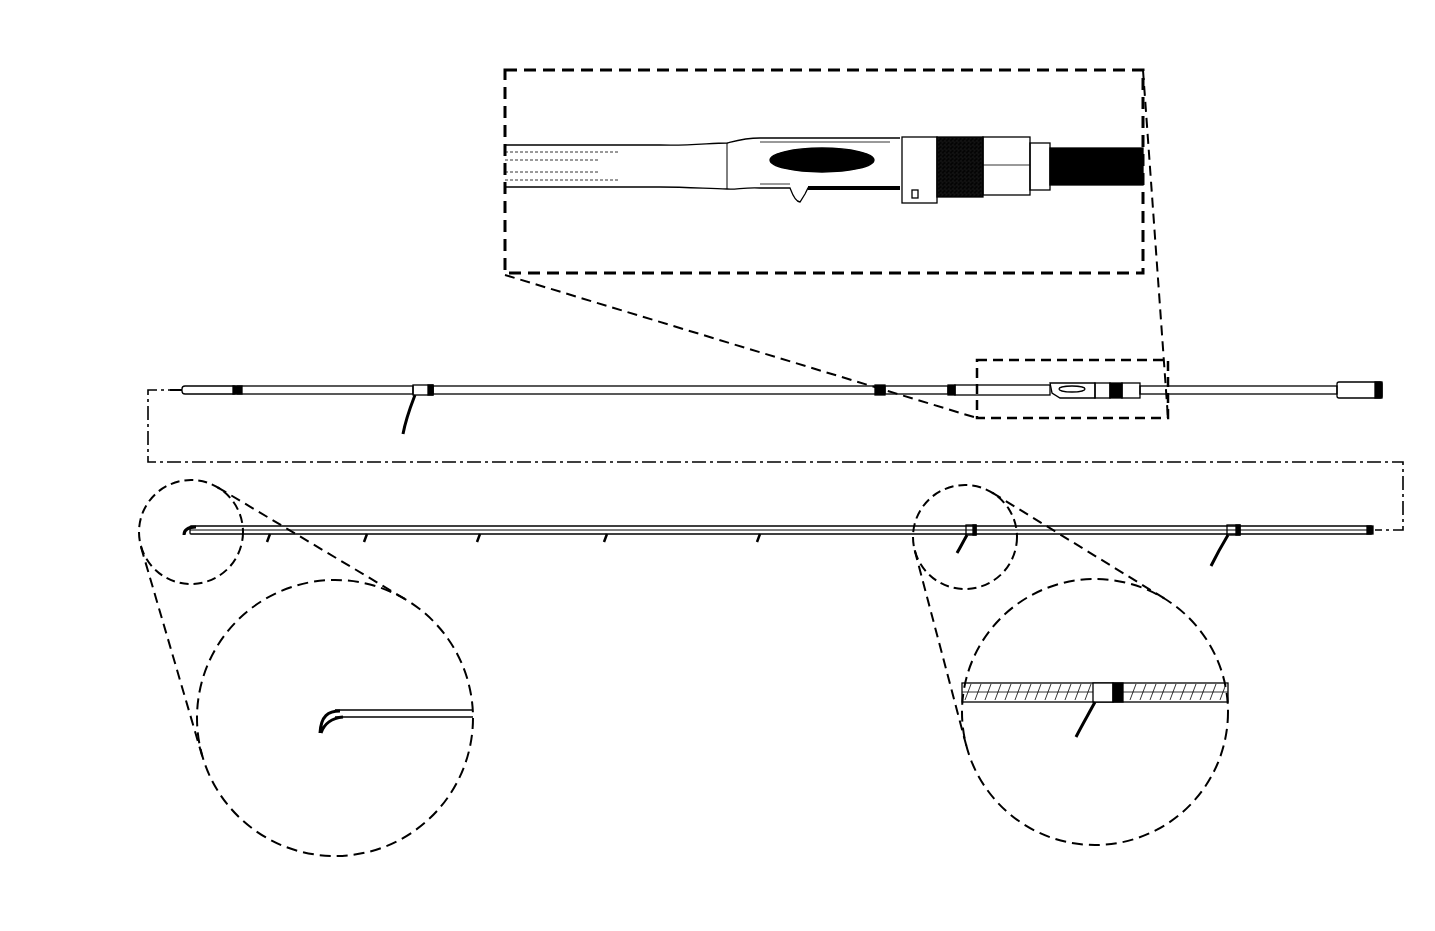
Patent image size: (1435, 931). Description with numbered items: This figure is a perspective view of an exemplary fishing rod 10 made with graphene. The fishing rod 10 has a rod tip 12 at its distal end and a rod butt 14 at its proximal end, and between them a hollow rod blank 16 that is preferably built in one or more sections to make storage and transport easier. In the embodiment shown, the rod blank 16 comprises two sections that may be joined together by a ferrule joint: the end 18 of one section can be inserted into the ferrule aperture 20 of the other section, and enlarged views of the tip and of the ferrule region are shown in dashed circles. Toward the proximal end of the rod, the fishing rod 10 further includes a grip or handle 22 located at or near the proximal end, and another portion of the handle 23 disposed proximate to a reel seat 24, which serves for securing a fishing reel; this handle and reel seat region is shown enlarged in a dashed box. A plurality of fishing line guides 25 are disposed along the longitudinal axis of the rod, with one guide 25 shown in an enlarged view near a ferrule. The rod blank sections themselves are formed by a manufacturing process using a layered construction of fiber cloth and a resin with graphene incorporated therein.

The fishing rod 10 is at (777, 463).
The rod tip 12 is at (344, 704).
The rod butt 14 is at (1364, 382).
The hollow rod blank 16 is at (792, 335).
The end 18 is at (188, 384).
The ferrule aperture 20 is at (1371, 540).
The grip or handle 22 is at (1030, 134).
The portion of the handle 23 is at (675, 145).
The reel seat 24 is at (882, 143).
The fishing line guides 25 is at (1073, 736).